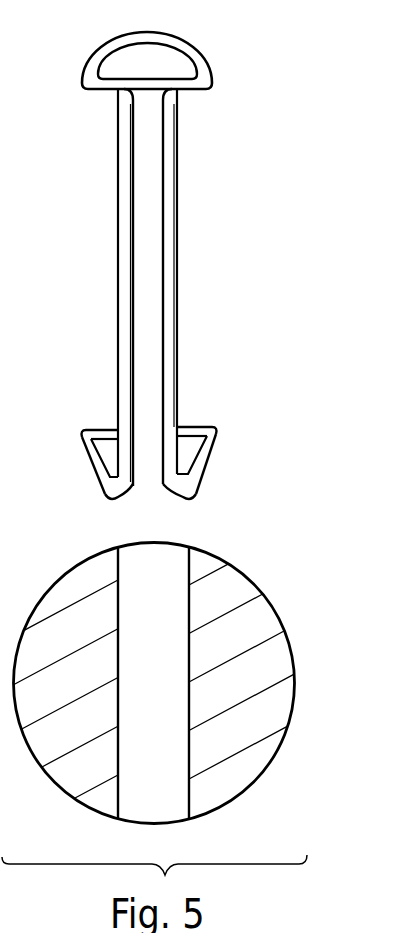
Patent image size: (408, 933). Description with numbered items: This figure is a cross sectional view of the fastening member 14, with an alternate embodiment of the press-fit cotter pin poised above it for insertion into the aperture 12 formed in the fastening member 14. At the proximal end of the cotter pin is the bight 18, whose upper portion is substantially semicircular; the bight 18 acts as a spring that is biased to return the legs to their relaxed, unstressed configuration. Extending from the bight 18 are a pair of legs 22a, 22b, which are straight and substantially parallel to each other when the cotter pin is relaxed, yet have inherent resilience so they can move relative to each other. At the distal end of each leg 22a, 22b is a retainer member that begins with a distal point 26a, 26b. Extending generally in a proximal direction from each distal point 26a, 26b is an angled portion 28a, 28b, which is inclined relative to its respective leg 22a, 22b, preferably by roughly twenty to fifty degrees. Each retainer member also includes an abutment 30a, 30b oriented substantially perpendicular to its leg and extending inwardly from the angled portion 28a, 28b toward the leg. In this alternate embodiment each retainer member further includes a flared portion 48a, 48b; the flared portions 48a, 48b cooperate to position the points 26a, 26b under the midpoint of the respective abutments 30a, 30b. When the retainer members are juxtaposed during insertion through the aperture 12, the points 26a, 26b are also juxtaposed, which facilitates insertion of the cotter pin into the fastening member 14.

The aperture 12 is at (164, 772).
The fastening member 14 is at (253, 584).
The bight 18 is at (188, 42).
The leg 22a is at (118, 238).
The leg 22b is at (177, 243).
The distal point 26a is at (100, 487).
The distal point 26b is at (210, 485).
The angled portion 28a is at (83, 447).
The angled portion 28b is at (217, 441).
The abutment 30a is at (99, 428).
The abutment 30b is at (193, 427).
The flared portion 48a is at (131, 492).
The flared portion 48b is at (171, 478).